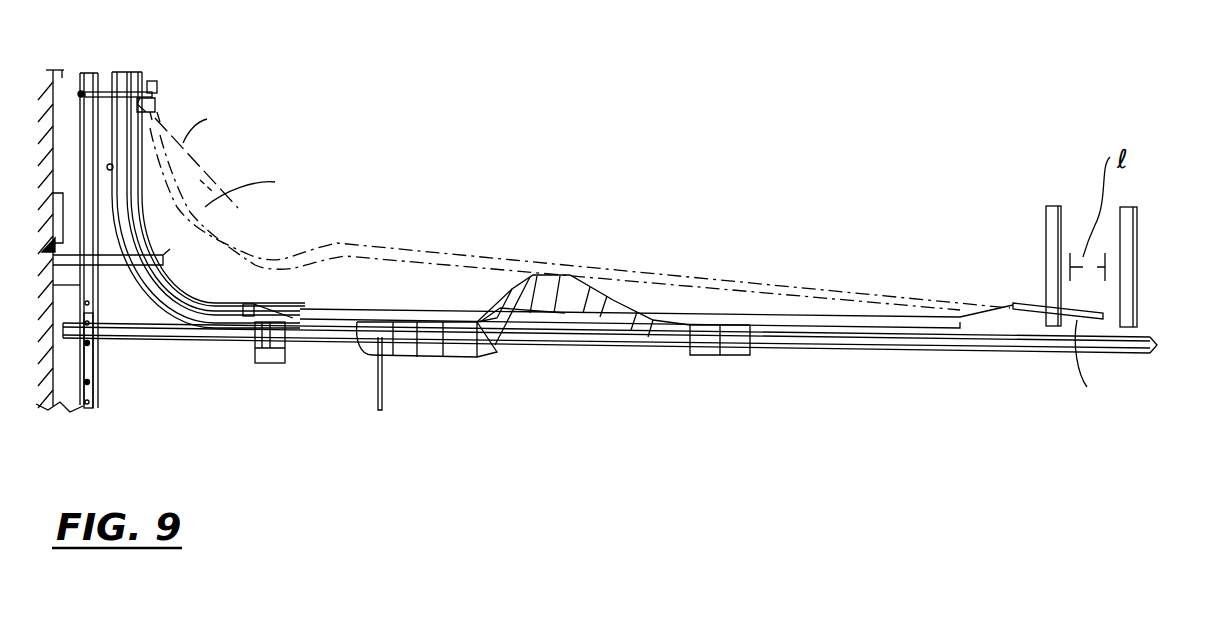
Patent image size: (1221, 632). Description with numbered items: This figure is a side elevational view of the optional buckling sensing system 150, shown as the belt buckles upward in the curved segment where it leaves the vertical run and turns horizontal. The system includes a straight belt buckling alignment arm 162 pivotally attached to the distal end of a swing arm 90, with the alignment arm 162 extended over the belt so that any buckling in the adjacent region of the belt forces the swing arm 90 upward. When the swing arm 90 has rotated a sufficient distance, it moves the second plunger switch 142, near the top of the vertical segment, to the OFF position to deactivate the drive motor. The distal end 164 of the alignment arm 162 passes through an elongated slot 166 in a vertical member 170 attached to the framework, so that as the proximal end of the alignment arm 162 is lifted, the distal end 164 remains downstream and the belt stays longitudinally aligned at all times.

The buckling sensing system 150 is at (348, 137).
The second plunger switch 142 is at (158, 88).
The swing arm 90 is at (207, 273).
The belt buckling alignment arm 162 is at (528, 315).
The distal end 164 is at (1030, 303).
The vertical member 170 is at (1043, 237).
The elongated slot 166 is at (1077, 310).